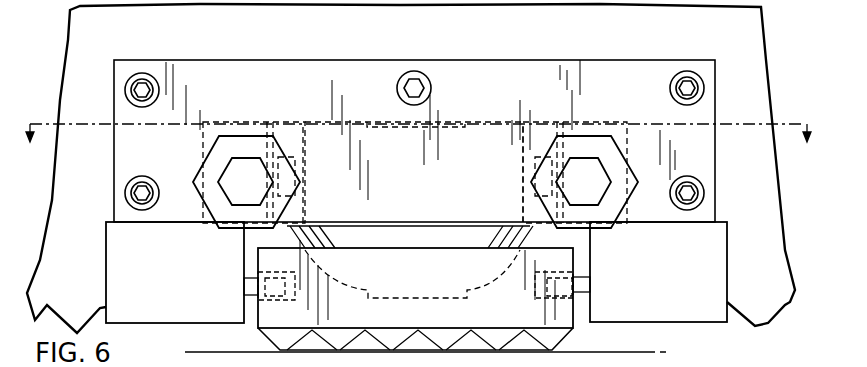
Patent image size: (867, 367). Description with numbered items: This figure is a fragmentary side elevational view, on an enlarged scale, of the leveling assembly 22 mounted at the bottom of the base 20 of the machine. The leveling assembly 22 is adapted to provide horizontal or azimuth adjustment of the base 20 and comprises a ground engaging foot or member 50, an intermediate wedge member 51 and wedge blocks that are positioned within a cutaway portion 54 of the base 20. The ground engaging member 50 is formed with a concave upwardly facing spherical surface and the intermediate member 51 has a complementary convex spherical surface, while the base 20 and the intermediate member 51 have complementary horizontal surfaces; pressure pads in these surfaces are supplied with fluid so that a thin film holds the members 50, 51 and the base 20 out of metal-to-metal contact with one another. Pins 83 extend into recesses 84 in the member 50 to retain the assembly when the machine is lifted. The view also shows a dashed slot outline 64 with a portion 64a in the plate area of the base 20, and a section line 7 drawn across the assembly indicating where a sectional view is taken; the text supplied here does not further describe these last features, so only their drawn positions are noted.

The base 20 is at (753, 50).
The leveling assembly 22 is at (612, 53).
The section line 7- 7 is at (417, 117).
The slot 64 is at (470, 120).
The slot portion 64a is at (470, 120).
The intermediate wedge member 51 is at (455, 240).
The cutaway portion 54 is at (582, 260).
The pins 83 is at (588, 283).
The recesses 84 is at (578, 301).
The ground engaging foot or member 50 is at (570, 318).